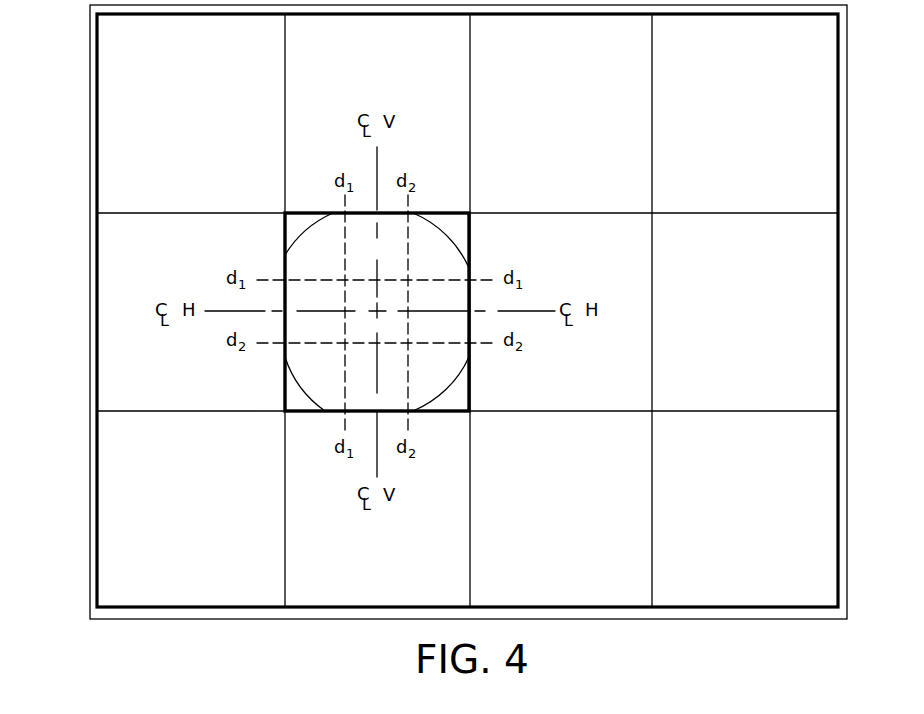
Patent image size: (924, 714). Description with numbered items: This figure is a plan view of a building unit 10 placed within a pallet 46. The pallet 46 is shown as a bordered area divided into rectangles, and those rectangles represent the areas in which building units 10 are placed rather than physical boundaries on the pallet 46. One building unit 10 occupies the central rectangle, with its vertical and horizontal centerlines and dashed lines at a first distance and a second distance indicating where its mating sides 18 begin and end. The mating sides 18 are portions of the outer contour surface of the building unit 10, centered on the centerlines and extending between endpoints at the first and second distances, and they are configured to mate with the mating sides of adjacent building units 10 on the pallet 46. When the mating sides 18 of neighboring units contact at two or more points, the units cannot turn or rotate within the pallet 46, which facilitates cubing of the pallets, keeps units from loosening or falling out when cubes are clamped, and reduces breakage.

The pallet 46 is at (52, 88).
The building unit 10 is at (330, 266).
The mating sides 18 is at (388, 213).